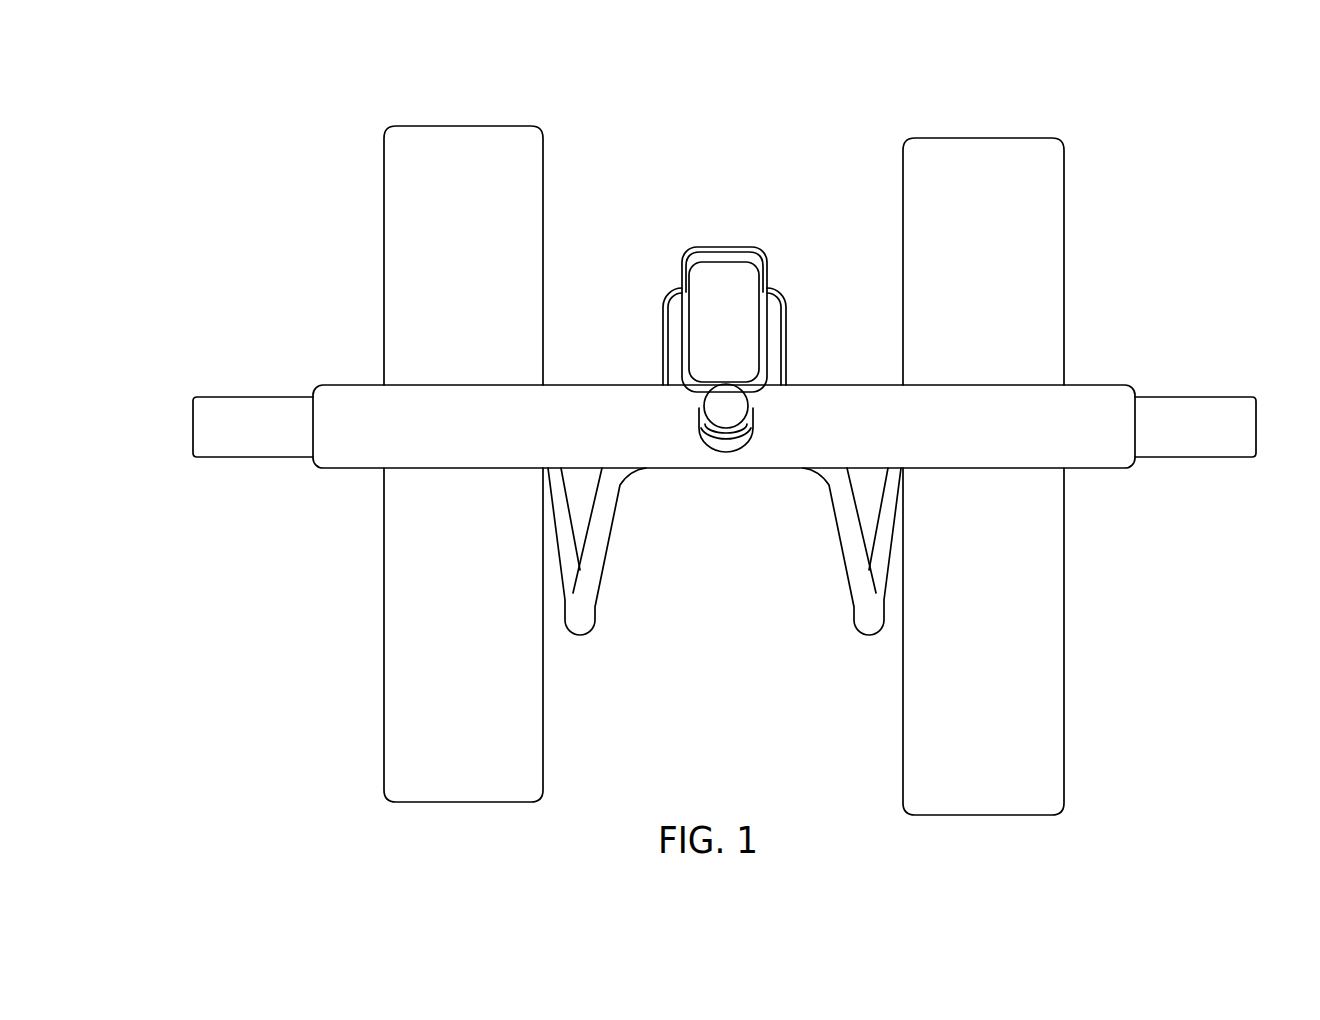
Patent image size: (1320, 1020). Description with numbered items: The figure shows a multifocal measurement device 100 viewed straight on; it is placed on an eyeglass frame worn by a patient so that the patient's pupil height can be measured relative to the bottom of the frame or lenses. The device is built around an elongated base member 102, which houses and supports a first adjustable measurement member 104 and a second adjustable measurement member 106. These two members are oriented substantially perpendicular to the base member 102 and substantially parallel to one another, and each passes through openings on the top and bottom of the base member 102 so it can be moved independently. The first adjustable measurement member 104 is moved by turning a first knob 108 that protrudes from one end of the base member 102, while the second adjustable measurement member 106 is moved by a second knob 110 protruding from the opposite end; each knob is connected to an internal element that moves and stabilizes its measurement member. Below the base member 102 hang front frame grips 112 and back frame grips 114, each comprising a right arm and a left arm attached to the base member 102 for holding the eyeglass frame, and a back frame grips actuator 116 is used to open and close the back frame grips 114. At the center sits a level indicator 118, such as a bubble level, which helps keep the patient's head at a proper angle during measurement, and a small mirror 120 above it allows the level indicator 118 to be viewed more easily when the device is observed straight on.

The multifocal measurement device 100 is at (873, 90).
The base member 102 is at (363, 391).
The first adjustable measurement member 104 is at (397, 153).
The second adjustable measurement member 106 is at (1050, 157).
The first knob 108 is at (205, 419).
The second knob 110 is at (1221, 403).
The front frame grips 112 is at (835, 487).
The back frame grips 114 is at (884, 553).
The back frame grips actuator 116 is at (669, 350).
The level indicator 118 is at (725, 402).
The mirror 120 is at (742, 267).